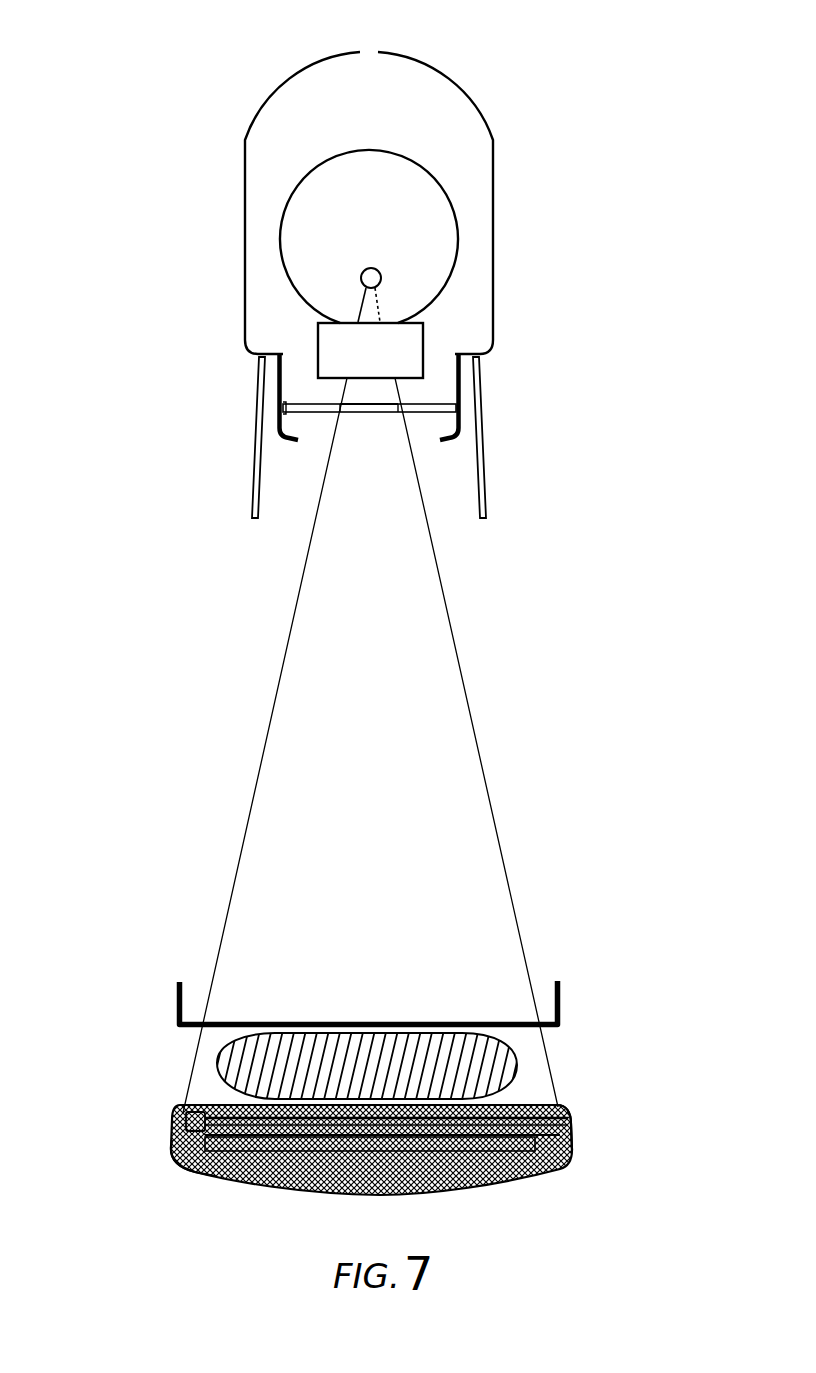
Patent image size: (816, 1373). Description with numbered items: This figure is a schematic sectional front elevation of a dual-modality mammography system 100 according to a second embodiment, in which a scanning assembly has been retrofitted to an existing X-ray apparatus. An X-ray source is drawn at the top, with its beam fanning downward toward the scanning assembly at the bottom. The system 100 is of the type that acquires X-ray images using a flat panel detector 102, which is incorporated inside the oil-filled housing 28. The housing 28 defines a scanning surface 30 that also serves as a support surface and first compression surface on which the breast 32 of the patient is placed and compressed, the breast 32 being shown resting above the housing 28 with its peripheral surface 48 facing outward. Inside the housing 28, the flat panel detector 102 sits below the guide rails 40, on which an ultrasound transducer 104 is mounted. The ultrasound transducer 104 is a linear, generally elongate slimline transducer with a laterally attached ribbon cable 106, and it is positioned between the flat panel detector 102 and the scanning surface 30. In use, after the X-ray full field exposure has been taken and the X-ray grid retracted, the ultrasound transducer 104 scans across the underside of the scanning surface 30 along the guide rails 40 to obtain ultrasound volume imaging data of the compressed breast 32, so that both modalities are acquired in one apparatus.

The system 100 is at (590, 96).
The breast 32 is at (280, 1025).
The peripheral surface 48 is at (217, 1061).
The scanning surface 30 is at (213, 1104).
The ultrasound transducer 104 is at (183, 1118).
The ribbon cable 106 is at (187, 1166).
The housing 28 is at (558, 1104).
The guide rails 40 is at (565, 1118).
The flat panel detector 102 is at (572, 1152).